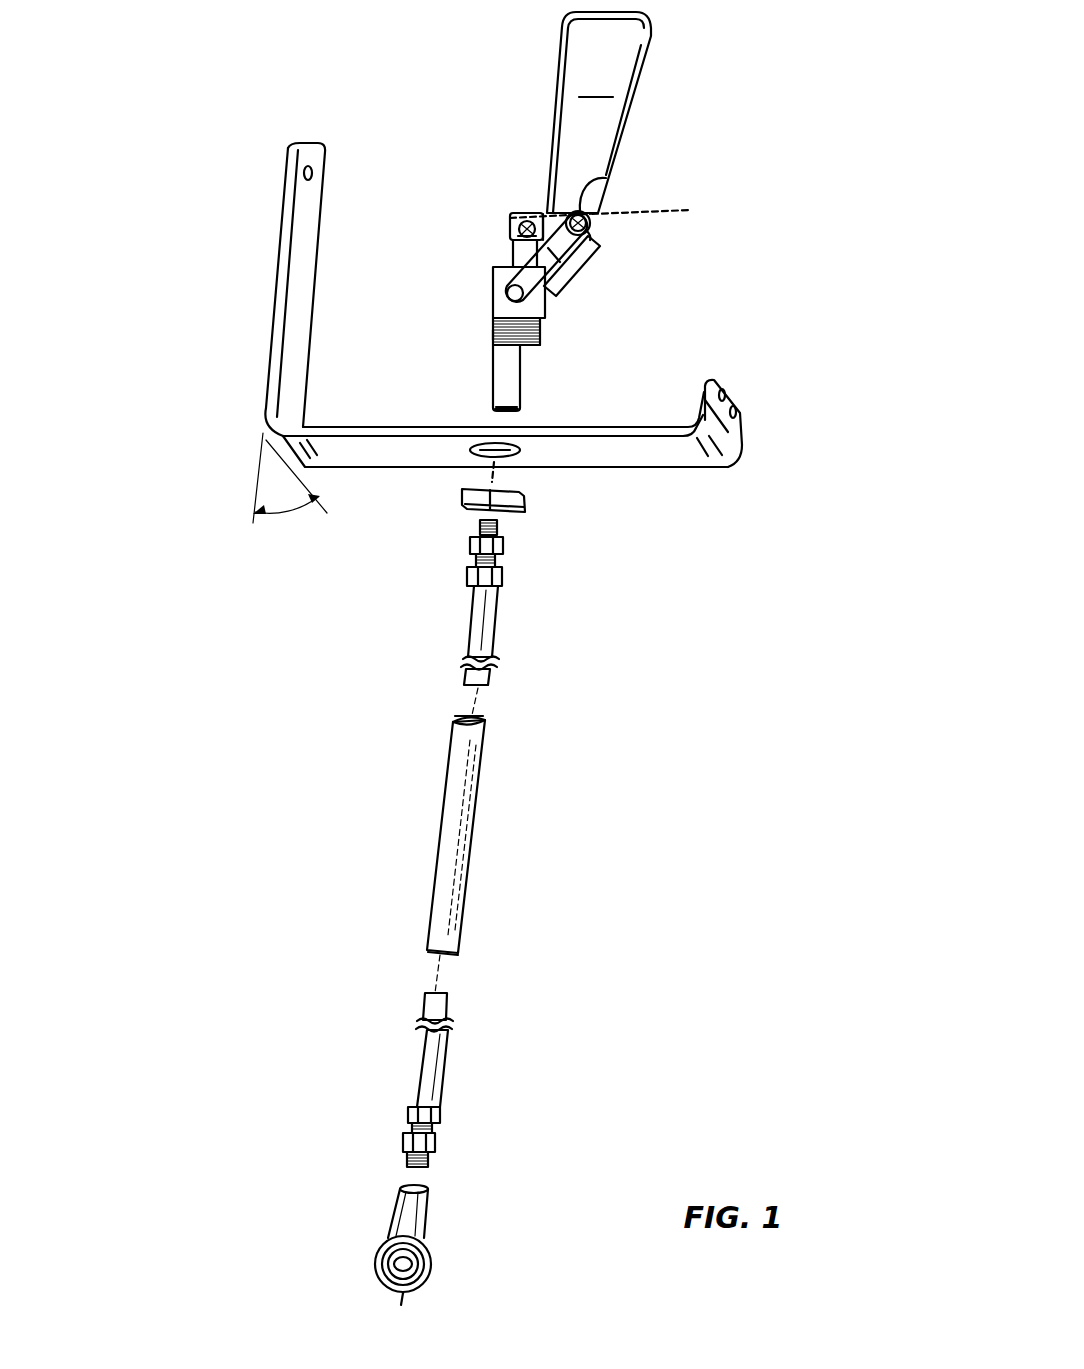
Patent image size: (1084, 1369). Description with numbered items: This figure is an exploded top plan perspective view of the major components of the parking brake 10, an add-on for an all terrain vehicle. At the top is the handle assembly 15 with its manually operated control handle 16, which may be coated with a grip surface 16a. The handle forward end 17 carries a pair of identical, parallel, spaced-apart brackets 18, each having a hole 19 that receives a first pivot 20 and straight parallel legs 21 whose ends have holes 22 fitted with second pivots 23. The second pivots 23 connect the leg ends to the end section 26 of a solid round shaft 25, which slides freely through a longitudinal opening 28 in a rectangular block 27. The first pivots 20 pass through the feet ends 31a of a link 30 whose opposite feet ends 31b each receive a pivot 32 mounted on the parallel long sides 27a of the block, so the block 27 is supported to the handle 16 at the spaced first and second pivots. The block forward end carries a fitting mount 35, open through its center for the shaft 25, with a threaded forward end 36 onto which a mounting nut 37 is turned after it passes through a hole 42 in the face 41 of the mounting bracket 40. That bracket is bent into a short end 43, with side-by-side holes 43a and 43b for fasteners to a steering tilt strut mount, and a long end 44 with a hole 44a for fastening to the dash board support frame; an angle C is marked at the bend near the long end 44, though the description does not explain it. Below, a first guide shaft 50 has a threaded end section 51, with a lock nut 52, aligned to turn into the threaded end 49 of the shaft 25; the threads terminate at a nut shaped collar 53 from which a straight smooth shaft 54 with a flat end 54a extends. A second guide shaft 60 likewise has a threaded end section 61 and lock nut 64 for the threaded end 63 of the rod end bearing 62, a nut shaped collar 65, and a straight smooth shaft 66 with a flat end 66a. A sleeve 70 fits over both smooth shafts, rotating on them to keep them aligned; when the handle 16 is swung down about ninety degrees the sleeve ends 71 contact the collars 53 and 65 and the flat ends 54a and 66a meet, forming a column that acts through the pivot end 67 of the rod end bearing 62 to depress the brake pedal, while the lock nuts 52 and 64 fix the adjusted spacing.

The parking brake 10 is at (640, 588).
The handle assembly 15 is at (582, 277).
The control handle 16 is at (660, 81).
The grip surface 16a is at (595, 85).
The forward end 17 is at (592, 223).
The brackets 18 is at (538, 203).
The hole 19 is at (592, 215).
The first pivot 20 is at (592, 235).
The legs 21 is at (520, 214).
The holes 22 is at (512, 218).
The second pivots 23 is at (512, 230).
The solid round shaft 25 is at (515, 252).
The end section 26 is at (527, 213).
The rectangular block 27 is at (546, 312).
The parallel long sides 27a is at (502, 320).
The longitudinal opening 28 is at (500, 272).
The link 30 is at (584, 250).
The feet ends 31a is at (595, 190).
The opposite feet ends 31b is at (546, 296).
The pivot 32 is at (506, 296).
The fitting mount 35 is at (546, 346).
The threaded forward end 36 is at (487, 333).
The mounting nut 37 is at (527, 503).
The mounting bracket 40 is at (499, 315).
The face 41 is at (598, 459).
The hole 42 is at (482, 456).
The short end 43 is at (740, 425).
The hole 43a is at (735, 390).
The hole 43b is at (745, 412).
The long end 44 is at (275, 355).
The hole 44a is at (310, 165).
The threaded end 49 is at (495, 411).
The first guide shaft 50 is at (448, 620).
The threaded end section 51 is at (481, 526).
The lock nut 52 is at (471, 545).
The nut shaped collar 53 is at (468, 582).
The straight smooth shaft 54 is at (486, 625).
The flat end 54a is at (480, 686).
The second guide shaft 60 is at (383, 1137).
The threaded end section 61 is at (410, 1160).
The rod end bearing 62 is at (392, 1220).
The threaded end 63 is at (420, 1187).
The lock nut 64 is at (405, 1140).
The nut shaped collar 65 is at (410, 1112).
The straight smooth shaft 66 is at (420, 1045).
The flat end 66a is at (428, 994).
The pivot end 67 is at (435, 1255).
The sleeve 70 is at (465, 838).
The ends 71 is at (460, 720).
The angle C is at (290, 483).